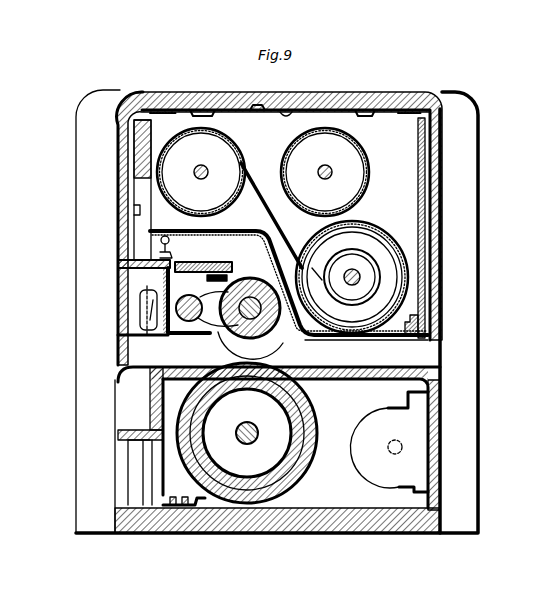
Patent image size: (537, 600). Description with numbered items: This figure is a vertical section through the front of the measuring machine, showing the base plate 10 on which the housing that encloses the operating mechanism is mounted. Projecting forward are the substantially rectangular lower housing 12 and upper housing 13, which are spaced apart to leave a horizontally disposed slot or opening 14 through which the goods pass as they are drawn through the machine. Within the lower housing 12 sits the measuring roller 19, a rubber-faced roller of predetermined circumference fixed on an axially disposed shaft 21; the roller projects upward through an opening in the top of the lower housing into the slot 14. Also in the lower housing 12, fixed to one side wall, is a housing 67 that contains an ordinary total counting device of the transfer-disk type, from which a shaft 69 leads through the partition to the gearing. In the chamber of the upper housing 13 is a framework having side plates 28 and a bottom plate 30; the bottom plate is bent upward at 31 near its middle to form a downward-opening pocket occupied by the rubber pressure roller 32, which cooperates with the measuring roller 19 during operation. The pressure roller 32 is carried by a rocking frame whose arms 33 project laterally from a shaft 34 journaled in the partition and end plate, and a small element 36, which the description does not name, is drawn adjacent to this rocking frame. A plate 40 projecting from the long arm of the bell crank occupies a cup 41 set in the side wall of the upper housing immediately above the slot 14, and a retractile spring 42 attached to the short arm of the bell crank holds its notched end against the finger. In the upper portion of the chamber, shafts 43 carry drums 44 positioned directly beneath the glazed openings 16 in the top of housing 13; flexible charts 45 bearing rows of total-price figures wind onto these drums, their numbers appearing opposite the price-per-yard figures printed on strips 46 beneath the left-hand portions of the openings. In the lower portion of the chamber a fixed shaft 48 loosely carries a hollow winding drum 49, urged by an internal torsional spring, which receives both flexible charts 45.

The base plate 10 is at (340, 532).
The lower housing 12 is at (440, 462).
The upper housing 13 is at (441, 268).
The slot or opening 14 is at (410, 354).
The glazed openings 16 is at (232, 100).
The measuring roller 19 is at (308, 430).
The shaft 21 is at (247, 424).
The side plates 28 is at (418, 205).
The bottom plate 30 is at (366, 351).
The upward bend 31 is at (257, 244).
The pressure roller 32 is at (276, 338).
The arms 33 is at (218, 307).
The shaft 34 is at (165, 332).
The small wheel 36 is at (189, 299).
The plate 40 is at (150, 305).
The cup 41 is at (128, 266).
The retractile spring 42 is at (195, 261).
The shafts 43 is at (202, 180).
The drums 44 is at (196, 132).
The flexible charts 45 is at (250, 180).
The strips 46 is at (183, 112).
The shaft 48 is at (354, 275).
The winding drum 49 is at (401, 325).
The housing 67 is at (374, 461).
The shaft 69 is at (401, 445).